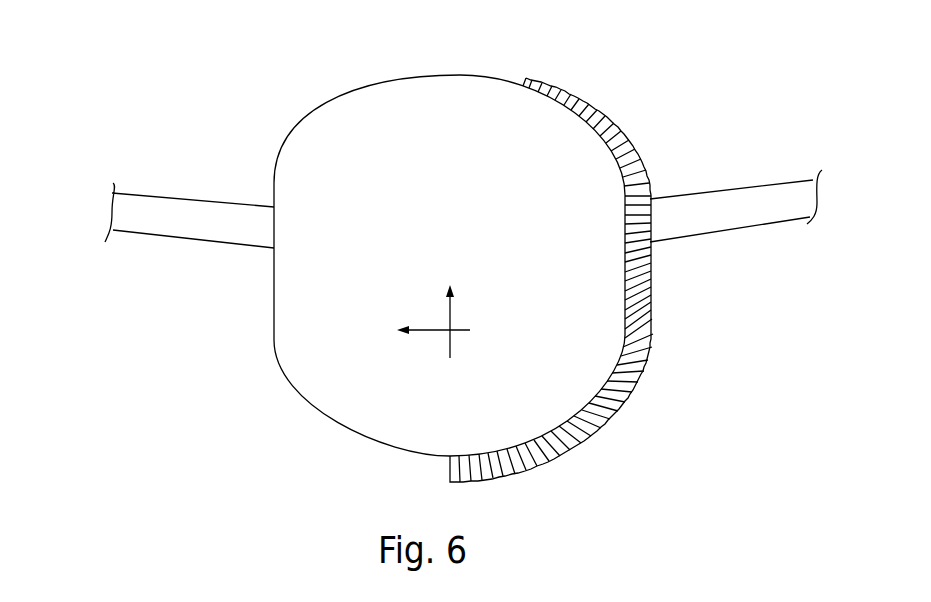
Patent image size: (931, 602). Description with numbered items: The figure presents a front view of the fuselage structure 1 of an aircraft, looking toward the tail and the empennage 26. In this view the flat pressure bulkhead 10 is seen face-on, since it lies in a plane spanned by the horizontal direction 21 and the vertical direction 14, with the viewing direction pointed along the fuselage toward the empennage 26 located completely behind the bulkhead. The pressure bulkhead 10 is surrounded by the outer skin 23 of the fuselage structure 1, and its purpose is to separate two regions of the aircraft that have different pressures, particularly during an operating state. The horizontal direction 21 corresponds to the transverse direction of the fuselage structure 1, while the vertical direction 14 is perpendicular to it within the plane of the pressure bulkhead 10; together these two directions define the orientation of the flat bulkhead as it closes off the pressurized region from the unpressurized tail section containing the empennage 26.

The fuselage structure 1 is at (119, 92).
The pressure bulkhead 10 is at (508, 115).
The vertical direction 14 is at (452, 313).
The horizontal direction 21 is at (423, 332).
The outer skin 23 is at (628, 362).
The empennage 26 is at (764, 206).